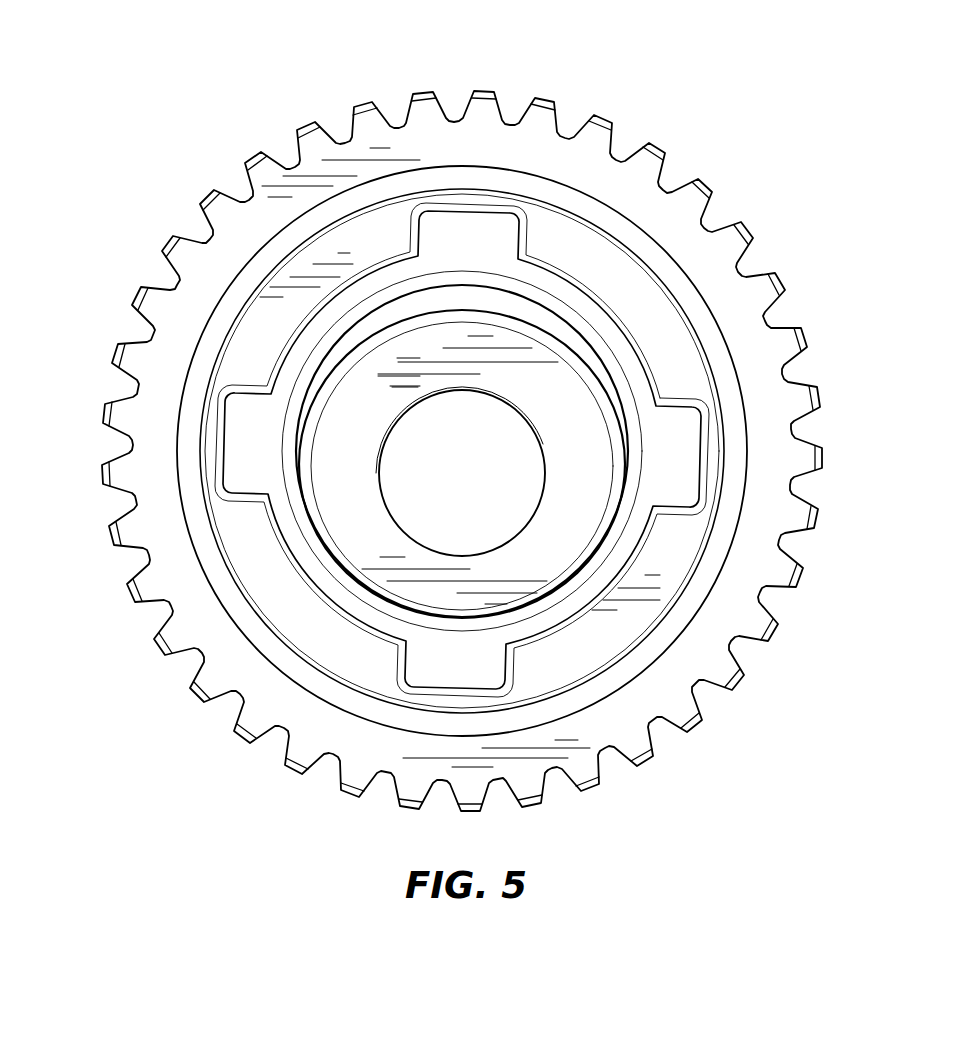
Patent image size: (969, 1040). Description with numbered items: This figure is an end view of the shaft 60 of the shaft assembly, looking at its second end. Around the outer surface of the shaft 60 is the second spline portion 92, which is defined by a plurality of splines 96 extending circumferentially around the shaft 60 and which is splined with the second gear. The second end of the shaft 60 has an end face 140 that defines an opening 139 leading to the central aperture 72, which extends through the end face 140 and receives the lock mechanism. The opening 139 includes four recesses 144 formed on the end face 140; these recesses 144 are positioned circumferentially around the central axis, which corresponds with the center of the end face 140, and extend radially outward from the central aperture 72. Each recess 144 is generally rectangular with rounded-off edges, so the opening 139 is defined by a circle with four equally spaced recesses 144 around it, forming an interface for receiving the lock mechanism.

The shaft 60 is at (421, 71).
The end face 140 is at (188, 194).
The second spline portion 92 is at (582, 162).
The splines 96 is at (660, 150).
The central aperture 72 is at (337, 374).
The opening 139 is at (565, 537).
The recesses 144 is at (470, 232).